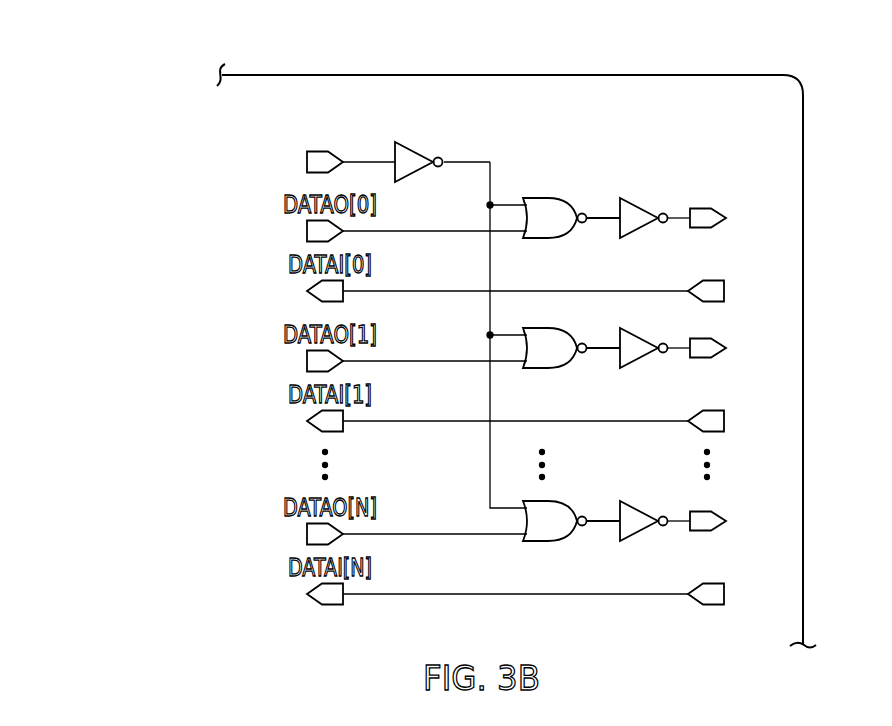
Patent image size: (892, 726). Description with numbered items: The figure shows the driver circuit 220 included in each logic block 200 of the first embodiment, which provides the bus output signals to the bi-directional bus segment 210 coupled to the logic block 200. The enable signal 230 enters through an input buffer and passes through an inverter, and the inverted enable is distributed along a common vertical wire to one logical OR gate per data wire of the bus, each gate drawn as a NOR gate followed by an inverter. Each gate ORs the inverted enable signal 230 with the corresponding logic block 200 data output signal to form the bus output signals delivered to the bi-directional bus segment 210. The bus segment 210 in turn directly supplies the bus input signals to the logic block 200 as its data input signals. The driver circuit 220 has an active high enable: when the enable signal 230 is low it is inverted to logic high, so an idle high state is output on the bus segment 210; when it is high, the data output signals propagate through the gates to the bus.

The logic block 200 is at (714, 86).
The bi-directional bus segment 210 is at (776, 351).
The driver circuit 220 is at (539, 120).
The enable signal 230 is at (307, 162).